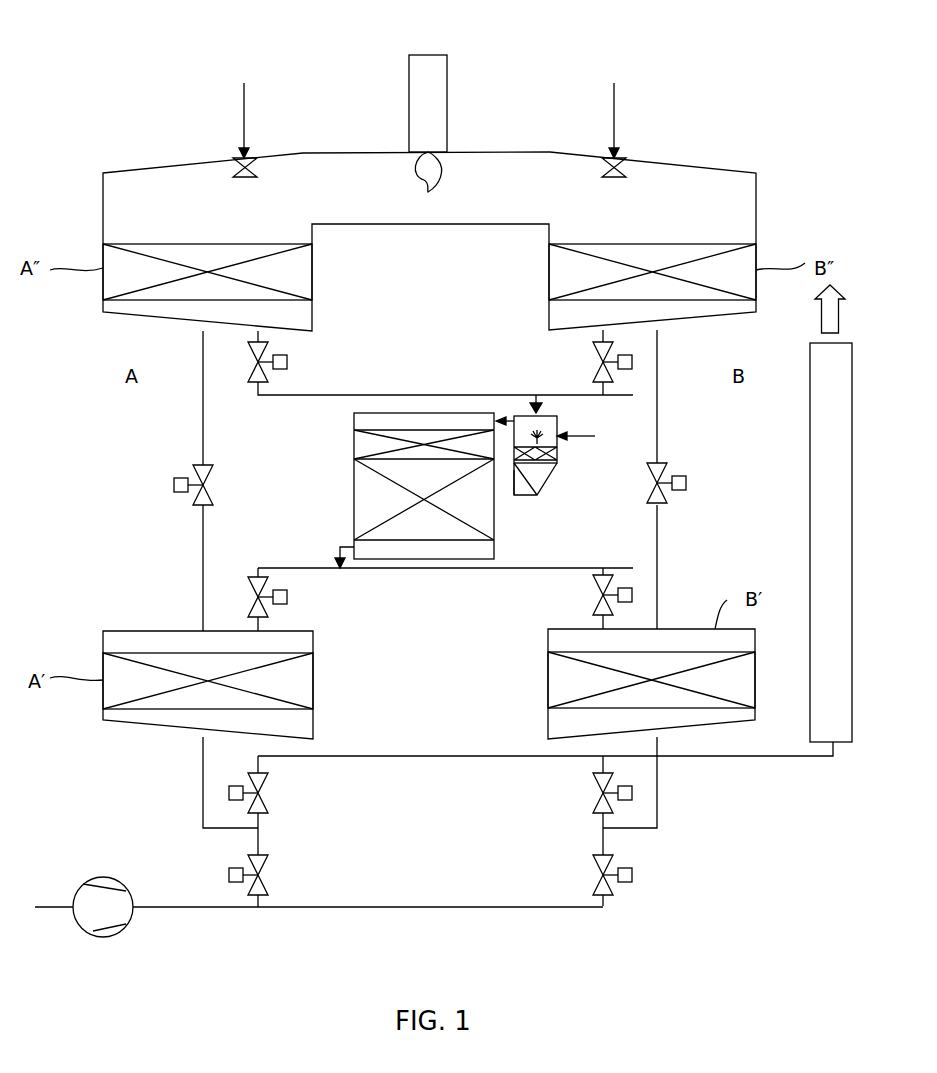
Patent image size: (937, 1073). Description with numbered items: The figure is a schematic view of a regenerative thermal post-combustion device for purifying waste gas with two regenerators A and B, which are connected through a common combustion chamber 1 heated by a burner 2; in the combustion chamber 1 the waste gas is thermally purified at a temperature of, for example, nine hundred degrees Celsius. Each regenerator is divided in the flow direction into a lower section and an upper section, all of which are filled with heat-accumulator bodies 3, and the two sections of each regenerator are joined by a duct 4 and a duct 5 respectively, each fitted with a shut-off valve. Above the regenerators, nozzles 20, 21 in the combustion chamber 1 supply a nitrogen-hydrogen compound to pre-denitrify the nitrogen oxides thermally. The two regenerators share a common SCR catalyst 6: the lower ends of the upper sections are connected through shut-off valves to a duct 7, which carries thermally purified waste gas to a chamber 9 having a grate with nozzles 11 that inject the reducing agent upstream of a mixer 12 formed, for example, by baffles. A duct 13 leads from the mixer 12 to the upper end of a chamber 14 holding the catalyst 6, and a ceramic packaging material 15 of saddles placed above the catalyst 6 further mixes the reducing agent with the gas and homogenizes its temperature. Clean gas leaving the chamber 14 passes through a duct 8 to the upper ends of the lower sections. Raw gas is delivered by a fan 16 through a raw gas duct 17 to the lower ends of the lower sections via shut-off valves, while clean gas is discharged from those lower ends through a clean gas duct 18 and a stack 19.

The combustion chamber 1 is at (501, 199).
The burner 2 is at (437, 137).
The heat-accumulator bodies 3 is at (297, 272).
The duct 4 is at (203, 440).
The duct 5 is at (657, 533).
The SCR catalyst 6 is at (416, 490).
The duct 7 is at (430, 395).
The duct 8 is at (440, 568).
The chamber 9 is at (569, 471).
The nozzles 11 is at (545, 433).
The mixer 12 is at (563, 453).
The duct 13 is at (523, 495).
The chamber 14 is at (368, 505).
The ceramic packaging material 15 is at (368, 443).
The fan 16 is at (102, 937).
The raw gas duct 17 is at (440, 907).
The clean gas duct 18 is at (440, 756).
The stack 19 is at (810, 468).
The nozzle 20 is at (252, 167).
The nozzle 21 is at (620, 167).